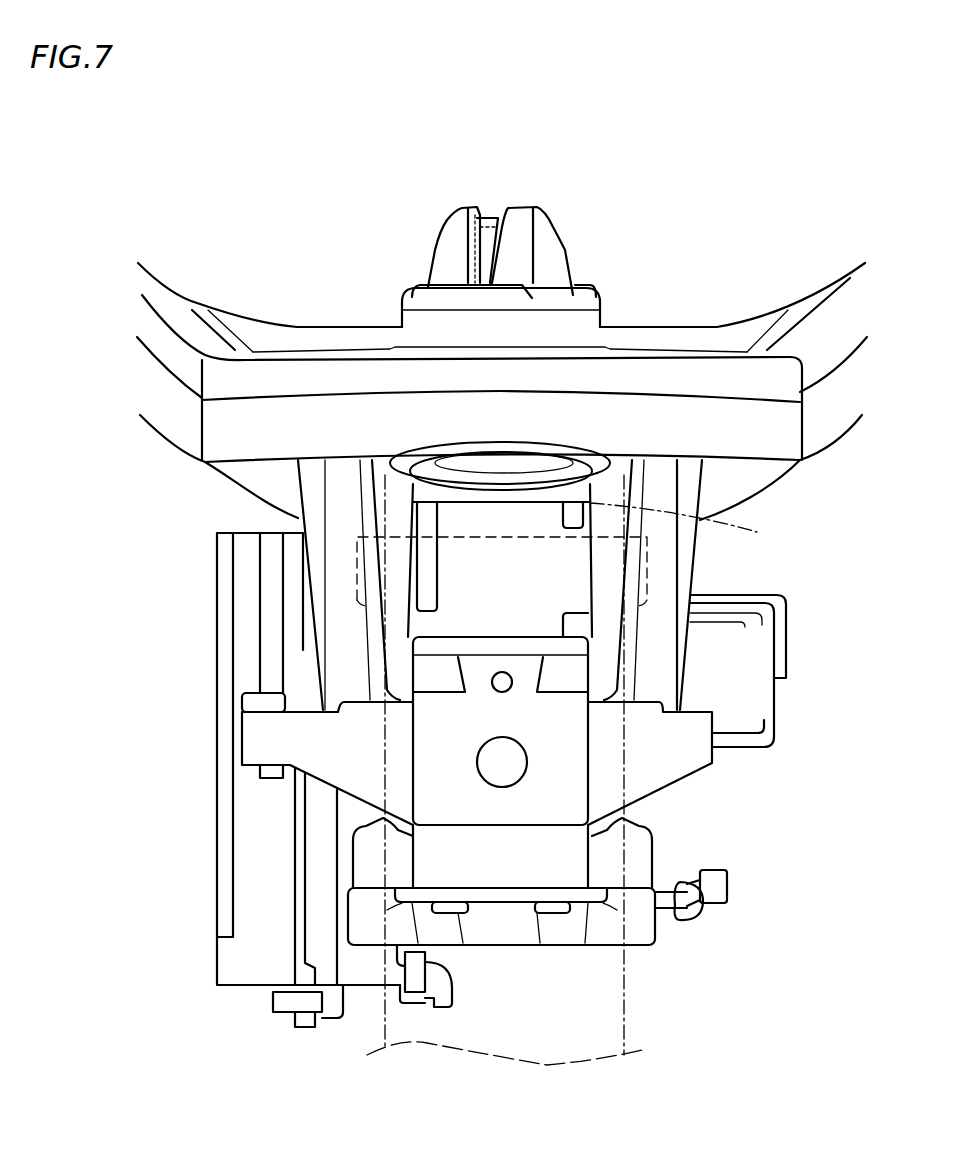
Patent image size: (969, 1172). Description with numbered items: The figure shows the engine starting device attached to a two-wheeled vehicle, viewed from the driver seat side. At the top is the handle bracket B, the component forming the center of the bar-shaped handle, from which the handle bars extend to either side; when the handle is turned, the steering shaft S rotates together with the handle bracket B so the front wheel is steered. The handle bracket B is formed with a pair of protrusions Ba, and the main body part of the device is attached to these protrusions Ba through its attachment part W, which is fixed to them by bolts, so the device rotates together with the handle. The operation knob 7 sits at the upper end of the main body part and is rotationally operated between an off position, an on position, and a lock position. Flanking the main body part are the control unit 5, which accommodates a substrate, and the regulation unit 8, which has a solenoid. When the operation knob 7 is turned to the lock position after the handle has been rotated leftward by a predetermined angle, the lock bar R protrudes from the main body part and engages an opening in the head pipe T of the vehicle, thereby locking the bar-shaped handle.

The operation knob 7 is at (452, 228).
The handle bracket B is at (692, 338).
The protrusions Ba is at (313, 498).
The steering shaft S is at (687, 524).
The regulation unit 8 is at (752, 703).
The attachment part W is at (698, 757).
The lock bar R is at (513, 768).
The head pipe T is at (602, 1005).
The control unit 5 is at (245, 843).